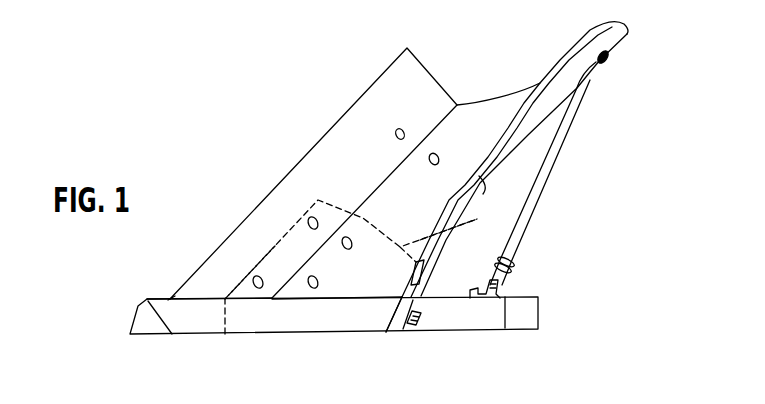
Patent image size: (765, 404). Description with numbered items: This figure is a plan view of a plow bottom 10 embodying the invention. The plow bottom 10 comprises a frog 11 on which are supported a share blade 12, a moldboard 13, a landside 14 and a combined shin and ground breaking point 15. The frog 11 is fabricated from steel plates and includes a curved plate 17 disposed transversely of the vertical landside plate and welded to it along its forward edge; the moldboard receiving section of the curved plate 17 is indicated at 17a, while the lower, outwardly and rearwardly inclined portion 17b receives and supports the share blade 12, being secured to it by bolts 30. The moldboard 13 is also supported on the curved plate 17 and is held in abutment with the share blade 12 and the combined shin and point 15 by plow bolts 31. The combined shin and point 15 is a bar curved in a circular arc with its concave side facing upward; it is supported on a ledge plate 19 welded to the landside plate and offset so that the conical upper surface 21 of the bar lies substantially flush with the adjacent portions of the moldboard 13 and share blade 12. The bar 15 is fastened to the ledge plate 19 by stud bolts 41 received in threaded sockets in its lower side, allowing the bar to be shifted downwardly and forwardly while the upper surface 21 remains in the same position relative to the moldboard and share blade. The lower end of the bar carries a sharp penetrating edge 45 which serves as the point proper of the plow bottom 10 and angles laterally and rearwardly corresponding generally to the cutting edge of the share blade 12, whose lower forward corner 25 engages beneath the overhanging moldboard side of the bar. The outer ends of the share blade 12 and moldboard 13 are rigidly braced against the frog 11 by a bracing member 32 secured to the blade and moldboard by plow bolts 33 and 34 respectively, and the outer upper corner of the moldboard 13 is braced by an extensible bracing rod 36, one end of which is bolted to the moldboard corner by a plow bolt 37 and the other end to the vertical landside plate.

The plow bottom 10 is at (240, 132).
The frog 11 is at (446, 290).
The share blade 12 is at (332, 140).
The moldboard 13 is at (478, 110).
The landside 14 is at (445, 322).
The combined shin and ground breaking point 15 is at (310, 324).
The curved plate 17 is at (362, 219).
The moldboard receiving section 17a is at (470, 224).
The share blade receiving portion 17b is at (275, 240).
The ledge plate 19 is at (412, 330).
The upper surface 21 is at (268, 318).
The lower forward corner 25 is at (177, 295).
The bolts 30 is at (262, 277).
The plow bolts 31 is at (321, 279).
The bracing member 32 is at (487, 191).
The plow bolt 33 is at (394, 133).
The plow bolt 34 is at (440, 155).
The extensible bracing rod 36 is at (536, 200).
The plow bolt 37 is at (610, 63).
The stud bolts 41 is at (416, 328).
The sharp penetrating edge 45 is at (133, 327).